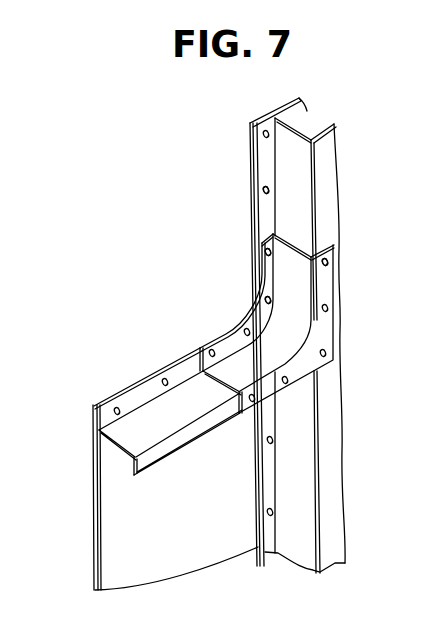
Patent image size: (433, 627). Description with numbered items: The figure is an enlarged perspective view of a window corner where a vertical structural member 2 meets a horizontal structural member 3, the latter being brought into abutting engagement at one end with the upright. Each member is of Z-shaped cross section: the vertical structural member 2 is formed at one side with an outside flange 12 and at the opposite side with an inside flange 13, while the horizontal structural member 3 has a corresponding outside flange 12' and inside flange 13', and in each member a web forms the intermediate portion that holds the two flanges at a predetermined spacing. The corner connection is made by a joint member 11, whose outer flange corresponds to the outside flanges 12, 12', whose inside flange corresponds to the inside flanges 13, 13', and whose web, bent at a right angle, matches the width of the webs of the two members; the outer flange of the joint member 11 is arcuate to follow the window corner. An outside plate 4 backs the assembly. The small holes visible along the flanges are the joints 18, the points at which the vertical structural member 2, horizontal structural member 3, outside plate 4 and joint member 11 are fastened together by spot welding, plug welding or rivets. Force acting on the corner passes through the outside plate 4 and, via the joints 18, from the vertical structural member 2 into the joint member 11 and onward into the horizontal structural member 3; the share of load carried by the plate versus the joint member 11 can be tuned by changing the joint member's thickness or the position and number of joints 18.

The vertical structural member 2 is at (299, 335).
The horizontal structural member 3 is at (148, 469).
The outside plate 4 is at (244, 310).
The joint member 11 is at (337, 333).
The outside flange 12 is at (259, 332).
The inside flange 13 is at (345, 348).
The outside flange 12' is at (121, 469).
The inside flange 13' is at (188, 468).
The joints 18 is at (269, 193).